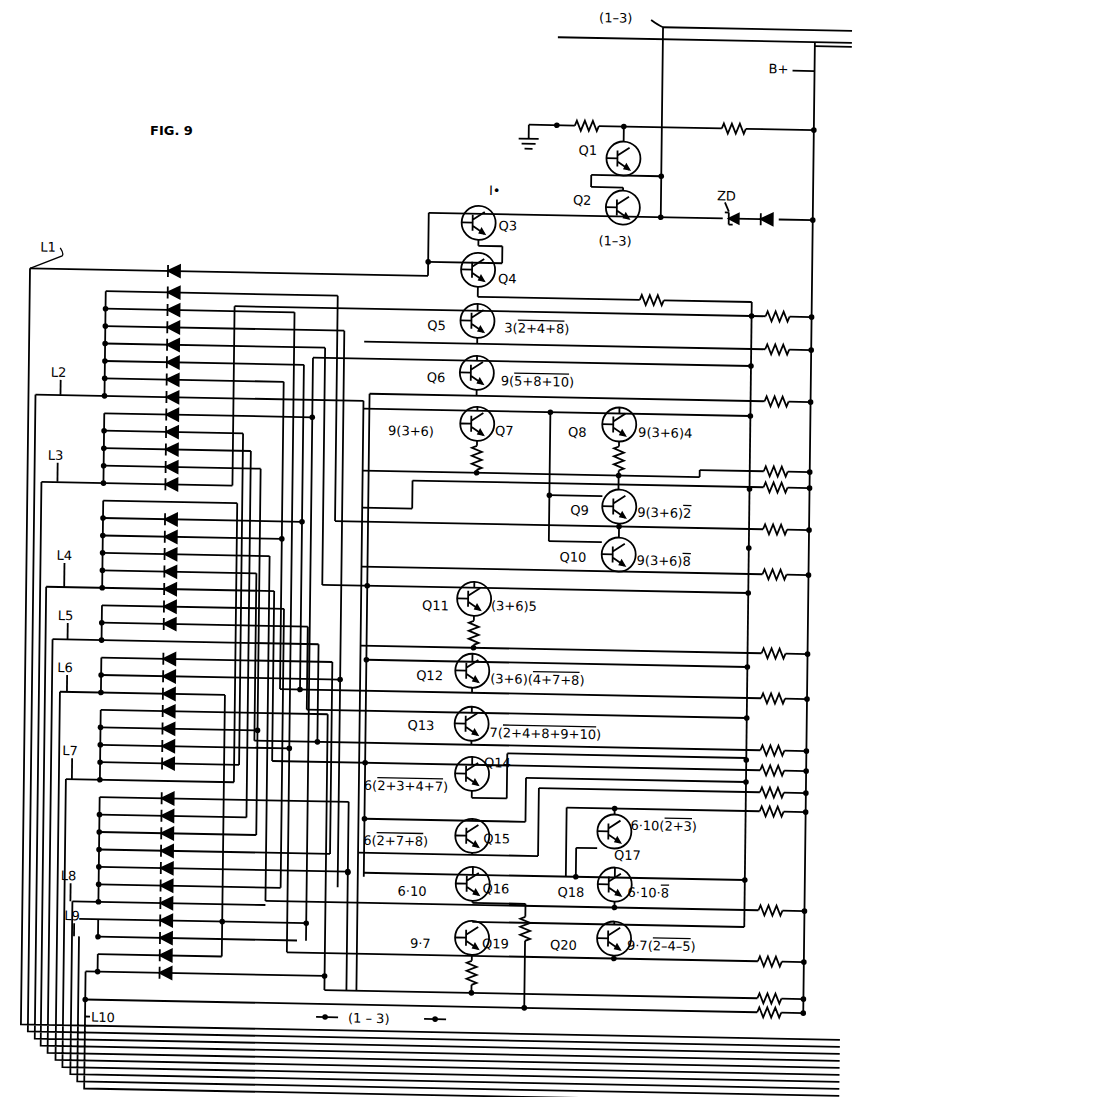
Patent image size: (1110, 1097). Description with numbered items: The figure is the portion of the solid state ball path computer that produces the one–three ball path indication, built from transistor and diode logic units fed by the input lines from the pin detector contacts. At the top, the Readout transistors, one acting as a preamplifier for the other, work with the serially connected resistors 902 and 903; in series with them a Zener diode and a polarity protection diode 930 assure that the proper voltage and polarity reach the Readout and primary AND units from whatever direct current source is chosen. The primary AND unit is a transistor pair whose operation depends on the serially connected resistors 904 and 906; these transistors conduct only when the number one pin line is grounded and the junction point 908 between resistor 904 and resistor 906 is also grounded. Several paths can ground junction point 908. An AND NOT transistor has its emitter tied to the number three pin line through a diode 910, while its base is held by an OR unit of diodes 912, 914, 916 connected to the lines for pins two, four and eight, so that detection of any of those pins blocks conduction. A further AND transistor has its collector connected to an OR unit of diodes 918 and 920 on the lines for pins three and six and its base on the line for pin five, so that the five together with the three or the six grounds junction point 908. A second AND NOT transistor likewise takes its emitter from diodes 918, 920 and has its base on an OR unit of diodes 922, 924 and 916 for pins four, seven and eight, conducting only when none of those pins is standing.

The resistor 902 is at (586, 116).
The resistor 903 is at (739, 116).
The resistor 904 is at (648, 291).
The resistor 906 is at (771, 300).
The junction point 908 is at (750, 310).
The diode 910 is at (170, 486).
The diode 912 is at (181, 394).
The diode 914 is at (181, 534).
The diode 916 is at (181, 795).
The diode 918 is at (181, 447).
The diode 920 is at (181, 690).
The diode 922 is at (181, 552).
The diode 924 is at (181, 725).
The polarity protection diode 930 is at (772, 198).